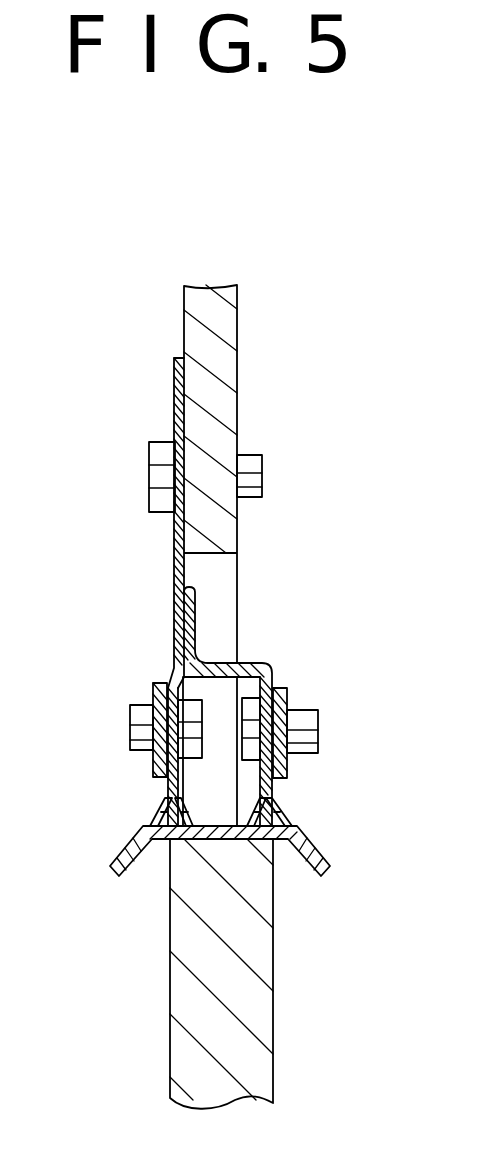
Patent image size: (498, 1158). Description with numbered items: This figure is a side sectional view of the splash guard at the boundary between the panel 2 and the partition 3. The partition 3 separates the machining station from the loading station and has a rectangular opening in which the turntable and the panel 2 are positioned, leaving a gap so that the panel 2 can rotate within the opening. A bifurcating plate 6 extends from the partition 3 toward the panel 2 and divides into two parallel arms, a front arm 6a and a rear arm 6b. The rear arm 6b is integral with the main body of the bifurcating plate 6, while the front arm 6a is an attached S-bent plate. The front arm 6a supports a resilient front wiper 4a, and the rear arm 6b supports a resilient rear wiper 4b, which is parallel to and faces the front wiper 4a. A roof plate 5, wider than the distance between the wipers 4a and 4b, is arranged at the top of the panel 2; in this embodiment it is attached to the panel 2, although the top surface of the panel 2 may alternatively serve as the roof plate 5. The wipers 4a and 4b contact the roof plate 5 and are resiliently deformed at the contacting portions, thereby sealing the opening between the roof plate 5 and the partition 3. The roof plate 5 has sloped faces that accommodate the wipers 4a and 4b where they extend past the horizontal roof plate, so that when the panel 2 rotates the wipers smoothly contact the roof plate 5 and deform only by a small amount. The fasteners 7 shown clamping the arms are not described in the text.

The panel 2 is at (260, 1012).
The partition 3 is at (232, 365).
The front wiper 4a is at (290, 812).
The rear wiper 4b is at (152, 812).
The roof plate 5 is at (325, 856).
The bifurcating plate 6 is at (174, 544).
The front arm 6a is at (265, 666).
The rear arm 6b is at (174, 663).
The bolt 7 is at (153, 693).